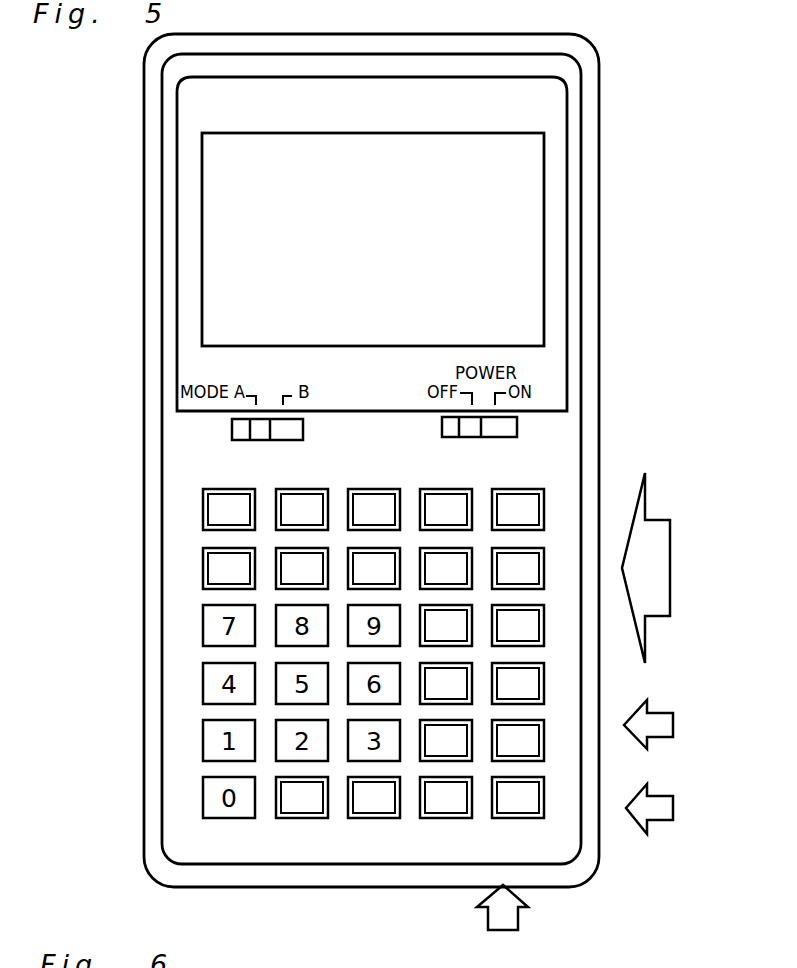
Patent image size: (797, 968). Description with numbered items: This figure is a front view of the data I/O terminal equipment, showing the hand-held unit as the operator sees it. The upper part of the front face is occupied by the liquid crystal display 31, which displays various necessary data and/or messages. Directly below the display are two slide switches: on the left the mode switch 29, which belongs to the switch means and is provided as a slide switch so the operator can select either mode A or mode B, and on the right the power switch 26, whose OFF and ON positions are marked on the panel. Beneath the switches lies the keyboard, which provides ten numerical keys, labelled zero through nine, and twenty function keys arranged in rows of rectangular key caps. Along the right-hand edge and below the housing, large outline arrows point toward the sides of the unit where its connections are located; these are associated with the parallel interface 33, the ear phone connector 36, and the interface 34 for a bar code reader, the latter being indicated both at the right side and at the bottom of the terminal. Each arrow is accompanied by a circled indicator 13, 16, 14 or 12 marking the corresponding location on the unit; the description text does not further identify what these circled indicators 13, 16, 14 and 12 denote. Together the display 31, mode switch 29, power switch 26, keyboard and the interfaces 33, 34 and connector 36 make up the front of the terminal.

The liquid crystal display 31 is at (383, 240).
The mode switch 29 is at (252, 448).
The power switch 26 is at (478, 444).
The parallel interface 33 is at (698, 568).
The ear phone connector 36 is at (699, 689).
The interface for a bar code reader 34 is at (626, 852).
The view indicator circle 13 is at (738, 504).
The view indicator circle 16 is at (675, 724).
The view indicator circle 14 is at (676, 809).
The view indicator circle 12 is at (502, 926).